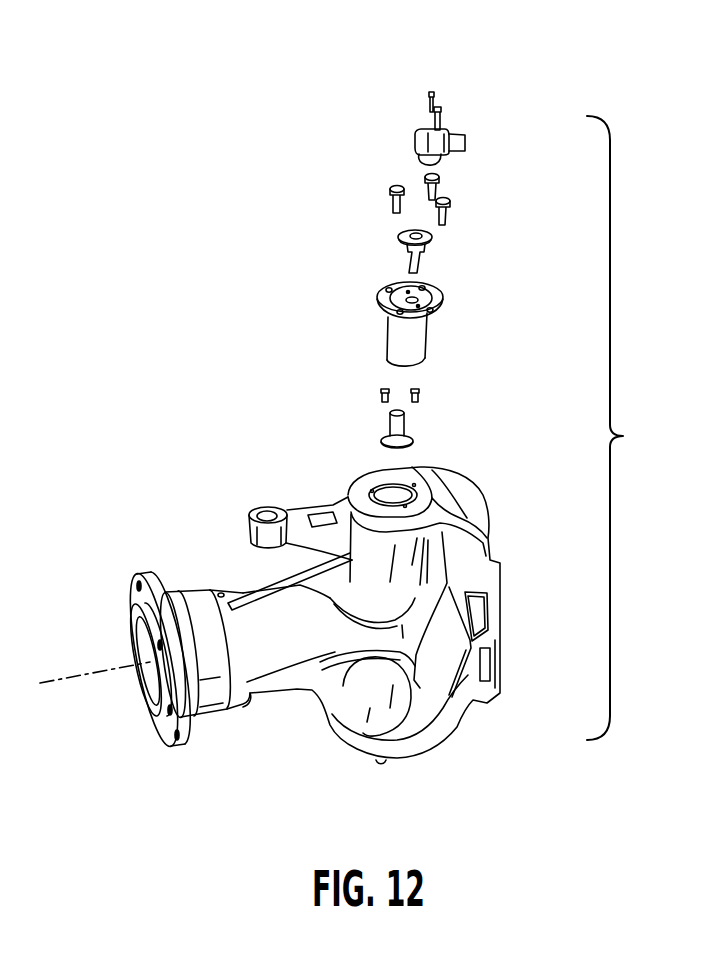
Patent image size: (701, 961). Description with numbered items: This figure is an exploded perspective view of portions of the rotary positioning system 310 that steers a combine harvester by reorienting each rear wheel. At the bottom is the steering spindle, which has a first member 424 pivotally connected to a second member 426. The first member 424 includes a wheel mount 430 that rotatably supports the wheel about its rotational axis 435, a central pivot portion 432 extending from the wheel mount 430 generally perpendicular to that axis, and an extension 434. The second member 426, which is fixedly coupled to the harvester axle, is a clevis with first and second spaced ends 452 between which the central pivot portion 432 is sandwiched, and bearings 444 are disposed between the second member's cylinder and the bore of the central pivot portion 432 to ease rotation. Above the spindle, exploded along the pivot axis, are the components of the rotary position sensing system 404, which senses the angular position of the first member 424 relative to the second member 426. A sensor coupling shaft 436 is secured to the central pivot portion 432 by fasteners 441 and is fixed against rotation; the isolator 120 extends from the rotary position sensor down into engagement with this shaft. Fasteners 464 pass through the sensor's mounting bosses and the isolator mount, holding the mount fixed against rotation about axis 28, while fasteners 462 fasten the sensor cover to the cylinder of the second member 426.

The axis 28 is at (418, 143).
The isolator 120 is at (440, 243).
The rotary positioning system 310 is at (297, 252).
The rotary position sensing system 404 is at (505, 153).
The first member 424 is at (265, 699).
The second member 426 is at (458, 499).
The wheel mount 430 is at (195, 597).
The central pivot portion 432 is at (381, 710).
The extension 434 is at (308, 516).
The rotational axis 435 is at (128, 668).
The sensor coupling shaft 436 is at (412, 438).
The fasteners 441 is at (382, 390).
The bearings 444 is at (393, 336).
The spaced ends 452 is at (409, 478).
The fasteners 462 is at (437, 212).
The fasteners 464 is at (433, 90).